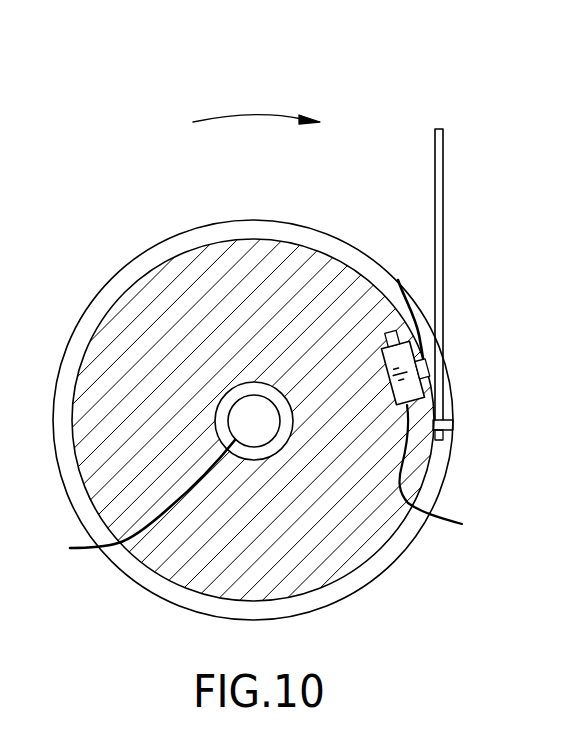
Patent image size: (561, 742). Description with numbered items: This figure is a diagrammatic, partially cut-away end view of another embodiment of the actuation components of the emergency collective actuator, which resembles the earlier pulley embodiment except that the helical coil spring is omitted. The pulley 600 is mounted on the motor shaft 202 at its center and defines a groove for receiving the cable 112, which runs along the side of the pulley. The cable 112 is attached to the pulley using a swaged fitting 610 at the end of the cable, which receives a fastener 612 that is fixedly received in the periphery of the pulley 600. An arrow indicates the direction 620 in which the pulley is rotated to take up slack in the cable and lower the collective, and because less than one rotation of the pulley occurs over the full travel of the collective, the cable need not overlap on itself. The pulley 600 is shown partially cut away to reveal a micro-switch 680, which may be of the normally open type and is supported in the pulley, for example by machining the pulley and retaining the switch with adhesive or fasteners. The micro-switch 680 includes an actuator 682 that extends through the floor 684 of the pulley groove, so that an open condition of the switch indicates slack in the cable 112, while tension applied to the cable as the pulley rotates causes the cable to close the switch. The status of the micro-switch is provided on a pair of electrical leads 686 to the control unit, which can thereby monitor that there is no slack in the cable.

The pulley 600 is at (255, 219).
The floor of the pulley groove 684 is at (312, 248).
The motor shaft 202 is at (131, 500).
The direction 620 is at (255, 118).
The cable 112 is at (443, 212).
The fastener 612 is at (447, 418).
The swaged fitting 610 is at (440, 440).
The actuator 682 is at (398, 280).
The electrical leads 686 is at (385, 330).
The micro-switch 680 is at (450, 471).